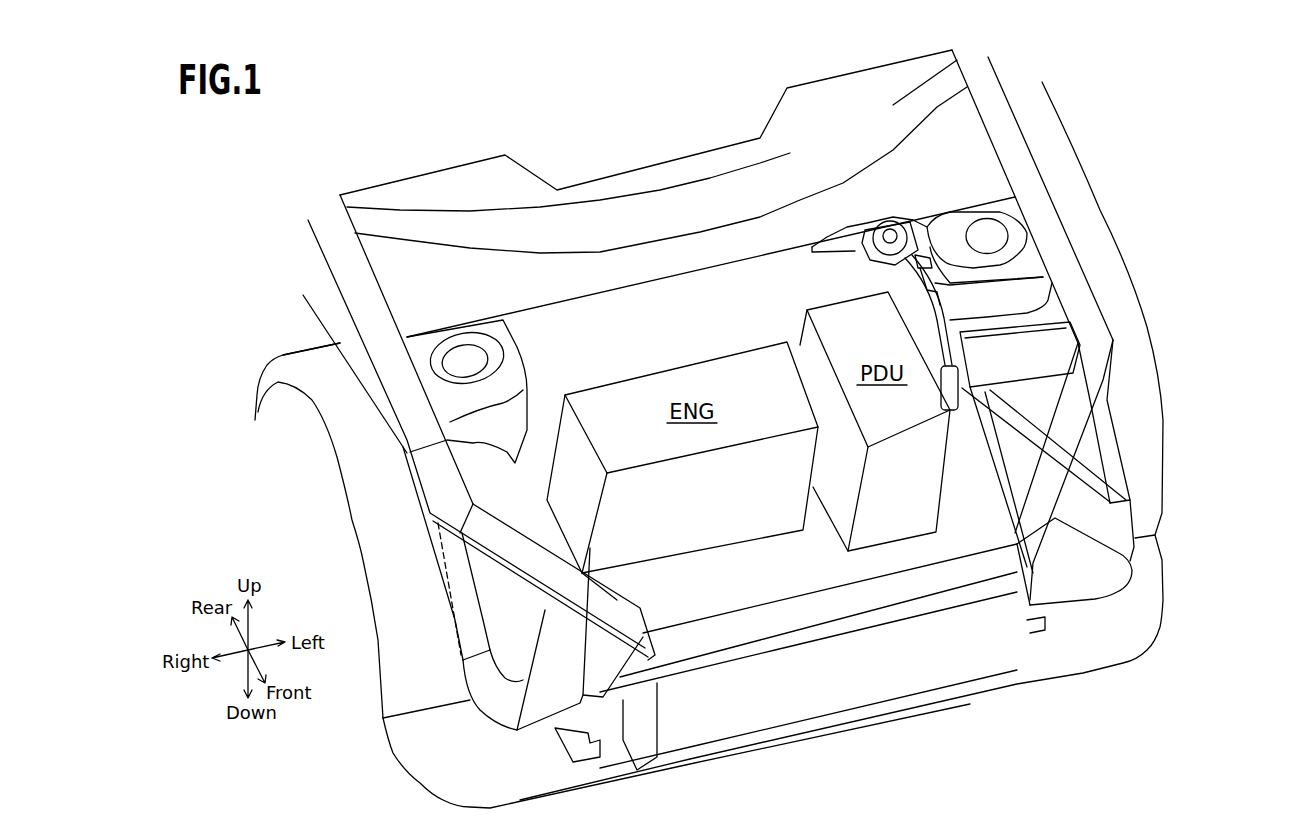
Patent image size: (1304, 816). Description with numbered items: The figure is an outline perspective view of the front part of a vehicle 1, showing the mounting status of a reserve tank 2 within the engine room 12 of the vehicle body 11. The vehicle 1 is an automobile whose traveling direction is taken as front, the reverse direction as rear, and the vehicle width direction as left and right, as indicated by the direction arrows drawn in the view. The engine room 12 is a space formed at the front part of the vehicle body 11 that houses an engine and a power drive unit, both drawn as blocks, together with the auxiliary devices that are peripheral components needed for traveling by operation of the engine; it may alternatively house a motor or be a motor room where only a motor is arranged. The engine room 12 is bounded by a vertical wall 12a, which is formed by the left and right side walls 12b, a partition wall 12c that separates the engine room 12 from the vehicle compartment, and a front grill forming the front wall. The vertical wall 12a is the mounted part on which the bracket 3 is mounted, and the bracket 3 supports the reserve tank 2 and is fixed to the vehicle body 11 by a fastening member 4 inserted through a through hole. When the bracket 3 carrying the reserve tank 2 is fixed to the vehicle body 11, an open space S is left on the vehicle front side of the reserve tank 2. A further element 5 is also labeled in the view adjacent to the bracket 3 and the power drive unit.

The vehicle 1 is at (1174, 463).
The reserve tank 2 is at (872, 237).
The bracket 3 is at (928, 227).
The fastening member 4 is at (970, 232).
The cable 5 is at (975, 350).
The vehicle body 11 is at (1037, 127).
The engine room 12 is at (769, 585).
The vertical wall 12a is at (527, 393).
The side wall 12b is at (960, 273).
The partition wall 12c is at (673, 323).
The open space S is at (872, 275).